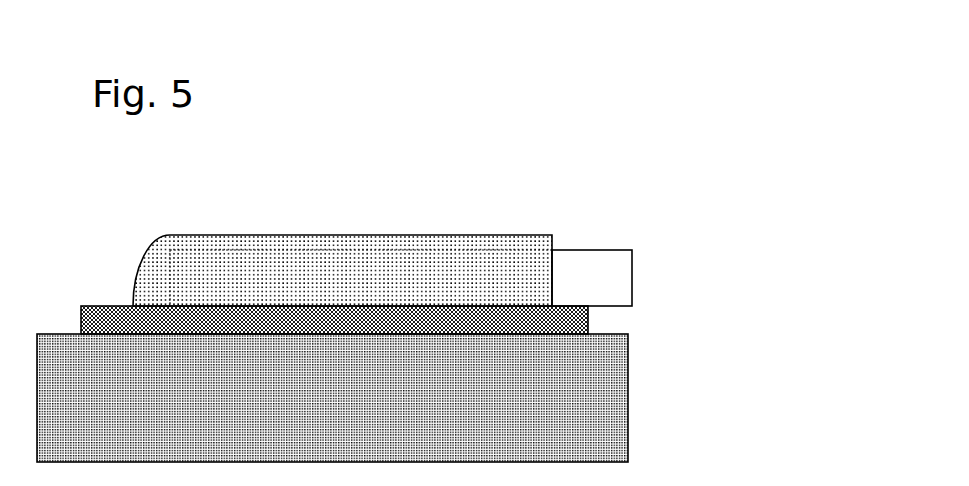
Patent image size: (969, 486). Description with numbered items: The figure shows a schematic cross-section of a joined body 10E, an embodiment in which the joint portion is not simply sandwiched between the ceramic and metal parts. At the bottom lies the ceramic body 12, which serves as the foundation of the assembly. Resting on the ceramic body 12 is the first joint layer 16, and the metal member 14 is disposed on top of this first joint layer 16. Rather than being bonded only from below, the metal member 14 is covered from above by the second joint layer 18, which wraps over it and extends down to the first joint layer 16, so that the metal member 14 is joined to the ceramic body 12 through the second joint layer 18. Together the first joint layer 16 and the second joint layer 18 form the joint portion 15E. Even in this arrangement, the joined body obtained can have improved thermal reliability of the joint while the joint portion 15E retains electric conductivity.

The joined body 10E is at (424, 305).
The ceramic body 12 is at (630, 386).
The metal member 14 is at (587, 250).
The joint portion 15E is at (446, 284).
The first joint layer 16 is at (588, 319).
The second joint layer 18 is at (530, 278).